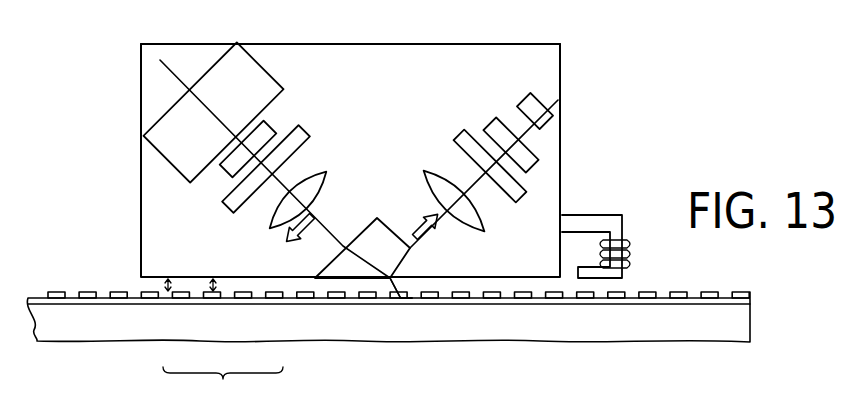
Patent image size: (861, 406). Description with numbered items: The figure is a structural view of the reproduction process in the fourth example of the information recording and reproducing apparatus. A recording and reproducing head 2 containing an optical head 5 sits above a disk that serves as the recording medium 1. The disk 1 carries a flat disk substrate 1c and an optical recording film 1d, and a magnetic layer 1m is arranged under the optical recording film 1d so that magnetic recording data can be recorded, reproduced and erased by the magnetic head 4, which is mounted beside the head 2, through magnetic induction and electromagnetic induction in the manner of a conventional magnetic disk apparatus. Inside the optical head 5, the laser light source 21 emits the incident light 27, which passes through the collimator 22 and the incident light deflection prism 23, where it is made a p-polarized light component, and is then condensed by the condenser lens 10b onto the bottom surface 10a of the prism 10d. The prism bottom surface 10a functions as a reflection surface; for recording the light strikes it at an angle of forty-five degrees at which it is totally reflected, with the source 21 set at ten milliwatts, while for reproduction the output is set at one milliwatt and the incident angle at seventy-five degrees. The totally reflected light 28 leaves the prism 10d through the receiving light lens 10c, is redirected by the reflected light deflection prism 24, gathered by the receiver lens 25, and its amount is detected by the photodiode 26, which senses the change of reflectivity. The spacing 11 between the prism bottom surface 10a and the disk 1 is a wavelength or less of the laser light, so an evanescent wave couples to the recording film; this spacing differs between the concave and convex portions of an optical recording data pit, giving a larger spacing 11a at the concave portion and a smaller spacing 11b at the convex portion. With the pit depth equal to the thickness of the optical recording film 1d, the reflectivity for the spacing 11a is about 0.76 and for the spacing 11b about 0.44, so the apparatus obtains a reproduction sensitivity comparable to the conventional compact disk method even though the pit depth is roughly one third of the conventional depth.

The recording medium 1 is at (622, 330).
The flat disk substrate 1c is at (335, 332).
The optical recording film 1d is at (368, 298).
The magnetic layer 1m is at (407, 300).
The recording and reproducing head 2 is at (560, 43).
The magnetic head 4 is at (623, 228).
The optical head 5 is at (436, 52).
The prism bottom surface 10a is at (400, 297).
The condenser lens 10b is at (327, 171).
The receiving light lens 10c is at (445, 176).
The prism 10d is at (391, 216).
The spacing 11 is at (223, 386).
The spacing at concave portion of pit 11a is at (168, 290).
The spacing at convex portion of pit 11b is at (215, 287).
The laser light source 21 is at (192, 181).
The collimator 22 is at (273, 130).
The incident light deflection prism 23 is at (312, 137).
The reflected light deflection prism 24 is at (459, 131).
The receiver lens 25 is at (497, 127).
The photodiode 26 is at (530, 102).
The incident light 27 is at (330, 238).
The totally reflected light 28 is at (425, 237).